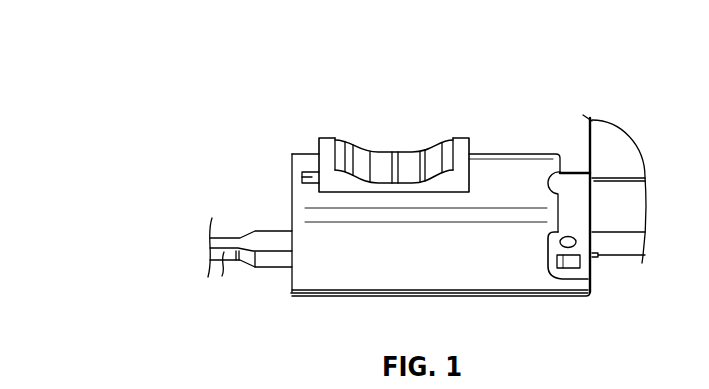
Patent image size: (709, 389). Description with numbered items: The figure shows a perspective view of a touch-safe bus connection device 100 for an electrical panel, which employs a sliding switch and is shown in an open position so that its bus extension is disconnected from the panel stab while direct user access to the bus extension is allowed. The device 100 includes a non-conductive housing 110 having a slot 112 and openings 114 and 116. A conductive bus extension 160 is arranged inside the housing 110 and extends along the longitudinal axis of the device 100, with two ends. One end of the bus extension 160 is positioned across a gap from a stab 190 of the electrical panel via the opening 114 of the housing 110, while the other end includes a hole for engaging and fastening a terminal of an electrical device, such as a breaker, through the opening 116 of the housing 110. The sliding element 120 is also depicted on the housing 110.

The touch-safe bus connection device 100 is at (228, 102).
The non-conductive housing 110 is at (481, 162).
The slot 112 is at (427, 165).
The opening 114 is at (288, 287).
The opening 116 is at (593, 202).
The cable cradle 120 is at (359, 138).
The conductive bus extension 160 is at (568, 236).
The stab 190 is at (248, 267).